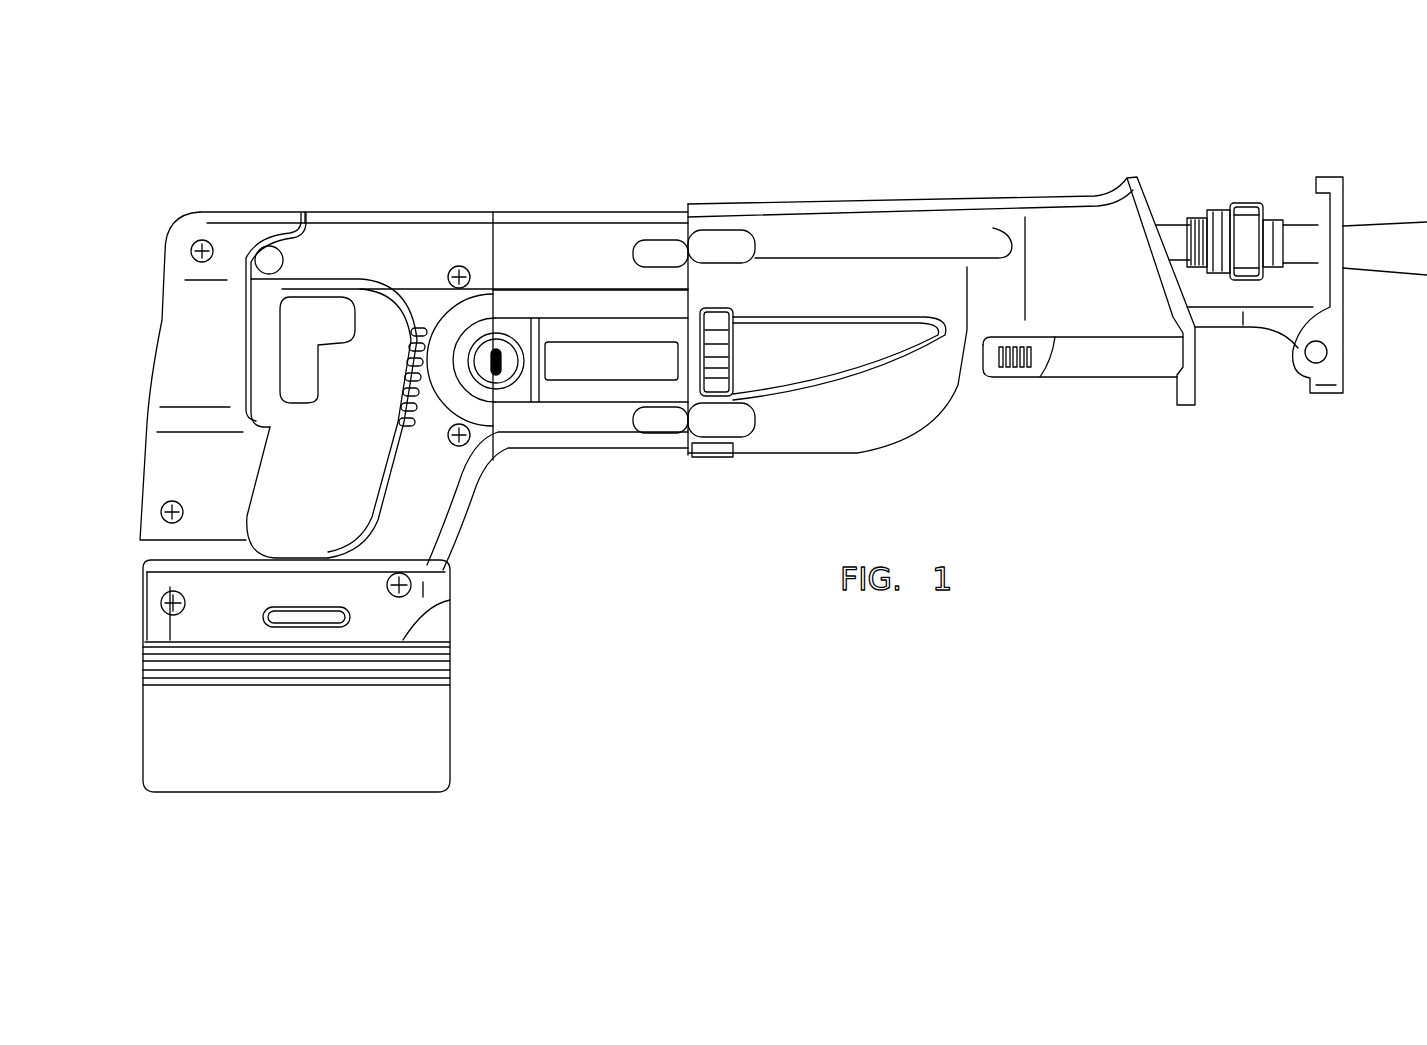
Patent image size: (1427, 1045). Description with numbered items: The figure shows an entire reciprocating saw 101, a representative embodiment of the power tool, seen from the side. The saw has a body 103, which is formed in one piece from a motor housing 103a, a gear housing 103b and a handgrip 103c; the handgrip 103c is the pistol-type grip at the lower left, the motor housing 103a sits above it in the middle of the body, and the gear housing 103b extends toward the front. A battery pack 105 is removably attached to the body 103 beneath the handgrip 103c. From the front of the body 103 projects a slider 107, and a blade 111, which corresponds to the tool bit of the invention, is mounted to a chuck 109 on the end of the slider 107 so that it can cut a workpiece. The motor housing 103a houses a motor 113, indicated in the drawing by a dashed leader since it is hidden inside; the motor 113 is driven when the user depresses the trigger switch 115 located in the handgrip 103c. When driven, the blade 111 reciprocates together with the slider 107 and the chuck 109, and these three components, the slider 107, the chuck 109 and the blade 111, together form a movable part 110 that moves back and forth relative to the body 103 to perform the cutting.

The reciprocating saw 101 is at (1000, 152).
The body 103 is at (783, 198).
The motor housing 103a is at (610, 228).
The gear housing 103b is at (901, 225).
The handgrip 103c is at (220, 297).
The battery pack 105 is at (453, 627).
The slider 107 is at (1158, 228).
The chuck 109 is at (1237, 205).
The movable part 110 is at (1288, 208).
The blade 111 is at (1373, 222).
The motor 113 is at (557, 267).
The trigger switch 115 is at (351, 318).